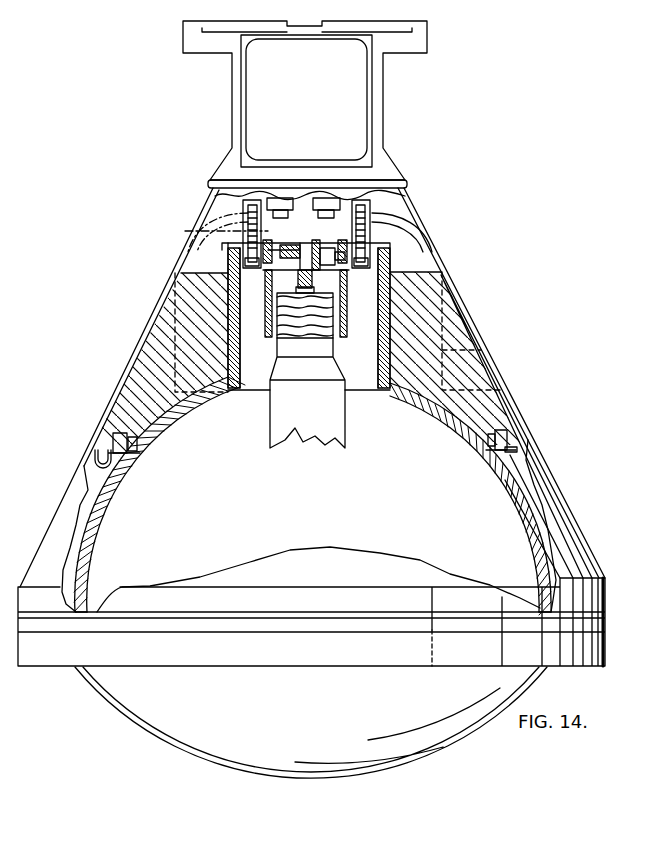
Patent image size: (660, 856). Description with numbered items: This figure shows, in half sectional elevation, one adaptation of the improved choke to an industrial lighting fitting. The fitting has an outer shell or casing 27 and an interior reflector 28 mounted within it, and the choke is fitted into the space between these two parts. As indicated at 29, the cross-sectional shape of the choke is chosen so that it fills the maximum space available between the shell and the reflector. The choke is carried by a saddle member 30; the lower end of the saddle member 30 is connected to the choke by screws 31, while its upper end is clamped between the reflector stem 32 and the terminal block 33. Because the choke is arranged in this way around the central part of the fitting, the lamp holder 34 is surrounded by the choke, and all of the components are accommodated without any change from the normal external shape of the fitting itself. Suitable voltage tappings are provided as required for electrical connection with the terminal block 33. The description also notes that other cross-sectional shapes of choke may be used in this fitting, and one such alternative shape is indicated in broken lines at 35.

The outer shell or casing 27 is at (463, 306).
The interior reflector 28 is at (113, 493).
The cross-sectional shape of the choke 29 is at (122, 400).
The saddle member 30 is at (222, 248).
The screws 31 is at (498, 477).
The reflector stem 32 is at (238, 287).
The terminal block 33 is at (398, 196).
The lamp holder 34 is at (343, 330).
The alternative cross-sectional shape of choke 35 is at (480, 348).